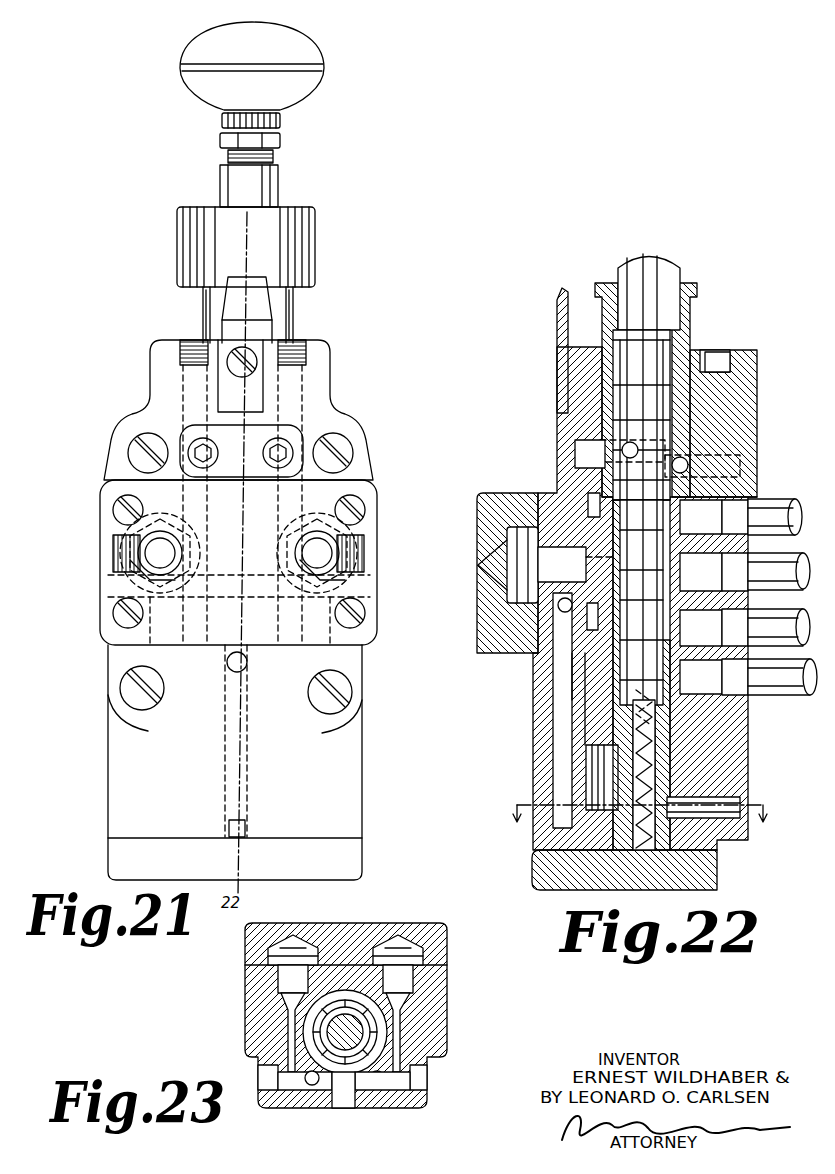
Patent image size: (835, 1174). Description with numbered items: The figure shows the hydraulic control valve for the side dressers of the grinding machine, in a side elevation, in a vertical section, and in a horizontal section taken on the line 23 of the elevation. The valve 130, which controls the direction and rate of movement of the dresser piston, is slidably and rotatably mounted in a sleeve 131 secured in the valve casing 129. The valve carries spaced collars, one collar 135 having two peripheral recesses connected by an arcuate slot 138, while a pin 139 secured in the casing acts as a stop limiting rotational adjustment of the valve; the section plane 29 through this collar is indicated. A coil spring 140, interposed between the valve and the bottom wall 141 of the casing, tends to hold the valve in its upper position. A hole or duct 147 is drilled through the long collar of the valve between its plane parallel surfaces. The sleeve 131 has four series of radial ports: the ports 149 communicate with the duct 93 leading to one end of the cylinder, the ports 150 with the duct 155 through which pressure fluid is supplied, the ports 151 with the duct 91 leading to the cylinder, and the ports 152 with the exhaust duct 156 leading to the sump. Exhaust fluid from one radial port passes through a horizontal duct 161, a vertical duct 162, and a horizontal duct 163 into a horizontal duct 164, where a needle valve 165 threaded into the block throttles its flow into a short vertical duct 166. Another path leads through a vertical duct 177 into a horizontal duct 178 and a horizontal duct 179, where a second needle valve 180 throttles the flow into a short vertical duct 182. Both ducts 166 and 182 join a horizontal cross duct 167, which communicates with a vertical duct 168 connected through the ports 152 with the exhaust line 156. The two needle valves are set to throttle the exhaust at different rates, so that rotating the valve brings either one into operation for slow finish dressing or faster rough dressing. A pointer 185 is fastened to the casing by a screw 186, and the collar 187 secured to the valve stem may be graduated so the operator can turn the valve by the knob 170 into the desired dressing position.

In FIG. 21, the section line 23 is at (190, 553).
In FIG. 22, the section line 29 is at (641, 807).
In FIG. 22, the duct 91 is at (790, 615).
In FIG. 22, the duct 93 is at (766, 500).
In FIG. 21, the valve casing 129 is at (345, 753).
In FIG. 22, the valve casing 129 is at (735, 768).
In FIG. 23, the valve casing 129 is at (248, 1022).
In FIG. 21, the valve 130 is at (279, 192).
In FIG. 22, the valve 130 is at (632, 272).
In FIG. 23, the valve 130 is at (350, 1025).
In FIG. 22, the sleeve 131 is at (688, 338).
In FIG. 23, the sleeve 131 is at (345, 1010).
In FIG. 22, the collar 135 is at (600, 776).
In FIG. 22, the arcuate slot 138 is at (656, 806).
In FIG. 22, the pin 139 is at (730, 792).
In FIG. 22, the coil spring 140 is at (634, 828).
In FIG. 22, the bottom wall 141 is at (718, 862).
In FIG. 22, the duct 147 is at (626, 448).
In FIG. 22, the ports 149 is at (600, 480).
In FIG. 22, the ports 150 is at (580, 500).
In FIG. 22, the ports 151 is at (580, 630).
In FIG. 22, the ports 152 is at (600, 614).
In FIG. 22, the duct 155 is at (780, 562).
In FIG. 22, the exhaust duct 156 is at (780, 690).
In FIG. 22, the duct 161 is at (700, 462).
In FIG. 21, the duct 162 is at (166, 470).
In FIG. 22, the duct 162 is at (740, 420).
In FIG. 23, the duct 162 is at (376, 1086).
In FIG. 23, the duct 163 is at (398, 1082).
In FIG. 23, the duct 164 is at (398, 1040).
In FIG. 22, the needle valve 165 is at (510, 547).
In FIG. 23, the needle valve 165 is at (415, 978).
In FIG. 21, the duct 166 is at (142, 583).
In FIG. 21, the cross duct 167 is at (270, 606).
In FIG. 22, the cross duct 167 is at (548, 642).
In FIG. 21, the duct 168 is at (240, 772).
In FIG. 22, the duct 168 is at (562, 722).
In FIG. 21, the knob 170 is at (300, 52).
In FIG. 21, the duct 177 is at (305, 392).
In FIG. 23, the duct 177 is at (312, 1086).
In FIG. 23, the duct 178 is at (292, 1080).
In FIG. 23, the duct 179 is at (290, 1036).
In FIG. 23, the needle valve 180 is at (280, 972).
In FIG. 21, the duct 182 is at (346, 581).
In FIG. 21, the pointer 185 is at (226, 327).
In FIG. 22, the pointer 185 is at (562, 342).
In FIG. 21, the screw 186 is at (286, 336).
In FIG. 21, the collar 187 is at (305, 240).